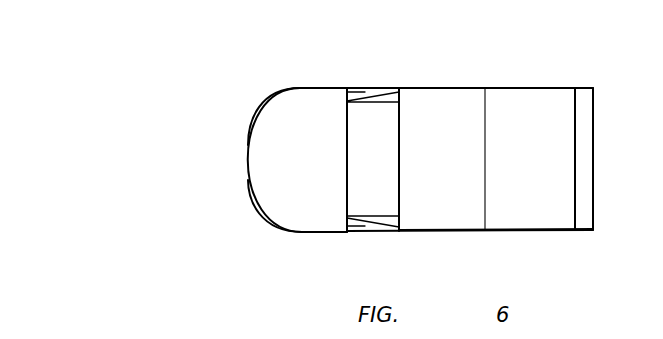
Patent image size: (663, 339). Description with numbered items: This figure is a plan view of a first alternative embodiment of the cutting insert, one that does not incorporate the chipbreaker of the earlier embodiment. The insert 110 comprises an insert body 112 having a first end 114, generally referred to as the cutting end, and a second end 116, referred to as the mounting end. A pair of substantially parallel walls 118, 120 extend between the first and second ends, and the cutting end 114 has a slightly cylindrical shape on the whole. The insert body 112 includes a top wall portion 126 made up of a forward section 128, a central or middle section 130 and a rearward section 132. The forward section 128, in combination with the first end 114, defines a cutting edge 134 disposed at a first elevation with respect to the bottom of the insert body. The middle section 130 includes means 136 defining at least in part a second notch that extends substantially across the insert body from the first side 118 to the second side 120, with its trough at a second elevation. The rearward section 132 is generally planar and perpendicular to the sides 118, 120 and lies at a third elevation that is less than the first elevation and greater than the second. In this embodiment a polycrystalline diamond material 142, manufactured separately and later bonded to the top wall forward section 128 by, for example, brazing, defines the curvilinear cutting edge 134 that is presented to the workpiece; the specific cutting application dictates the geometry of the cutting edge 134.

The insert 110 is at (243, 104).
The insert body 112 is at (570, 229).
The first end 114 is at (245, 160).
The second end 116 is at (583, 183).
The wall 118 is at (527, 231).
The wall 120 is at (540, 88).
The top wall portion 126 is at (430, 97).
The forward section 128 is at (325, 87).
The middle section 130 is at (462, 97).
The rearward section 132 is at (553, 125).
The cutting edge 134 is at (265, 216).
The means defining a second notch 136 is at (440, 207).
The polycrystalline material 142 is at (300, 107).